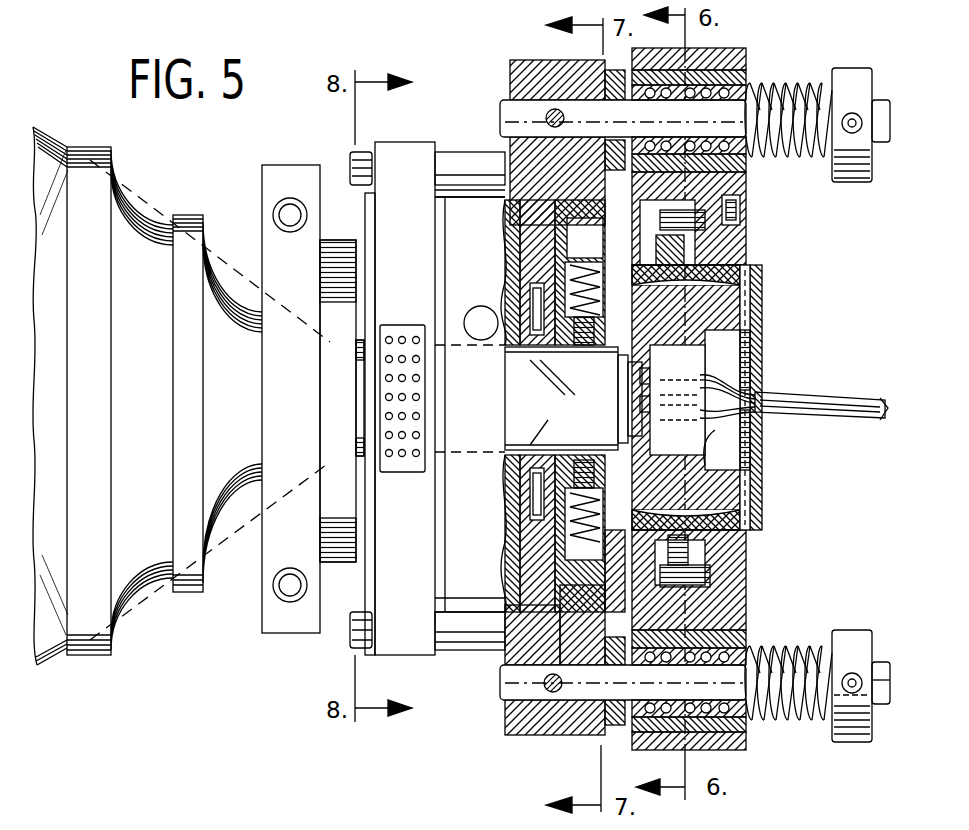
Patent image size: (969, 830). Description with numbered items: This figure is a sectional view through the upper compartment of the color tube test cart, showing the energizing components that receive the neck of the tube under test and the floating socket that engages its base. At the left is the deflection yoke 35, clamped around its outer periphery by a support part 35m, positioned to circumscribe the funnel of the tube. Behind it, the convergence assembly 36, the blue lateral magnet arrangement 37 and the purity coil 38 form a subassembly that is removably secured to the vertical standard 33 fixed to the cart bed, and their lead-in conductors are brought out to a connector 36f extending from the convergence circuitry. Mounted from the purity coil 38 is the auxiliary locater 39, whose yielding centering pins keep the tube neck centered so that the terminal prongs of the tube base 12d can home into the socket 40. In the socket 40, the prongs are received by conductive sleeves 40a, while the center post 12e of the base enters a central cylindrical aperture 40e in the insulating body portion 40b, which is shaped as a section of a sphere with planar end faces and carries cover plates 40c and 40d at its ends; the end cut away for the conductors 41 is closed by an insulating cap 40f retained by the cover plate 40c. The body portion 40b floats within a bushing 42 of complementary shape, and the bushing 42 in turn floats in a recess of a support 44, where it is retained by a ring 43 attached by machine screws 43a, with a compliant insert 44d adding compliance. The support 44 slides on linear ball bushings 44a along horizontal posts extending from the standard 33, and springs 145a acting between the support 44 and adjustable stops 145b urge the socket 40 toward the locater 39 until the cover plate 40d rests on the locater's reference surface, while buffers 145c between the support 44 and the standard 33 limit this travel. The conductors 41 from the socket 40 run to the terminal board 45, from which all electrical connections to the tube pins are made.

The deflection yoke 35 is at (130, 240).
The yoke support part 35m is at (275, 182).
The convergence assembly 36 is at (446, 210).
The connector 36f is at (402, 336).
The blue lateral magnet arrangement 37 is at (480, 215).
The purity coil 38 is at (512, 470).
The auxiliary locater 39 is at (616, 250).
The vertical standard 33 is at (505, 650).
The tube base 12d is at (644, 376).
The center post 12e is at (644, 407).
The socket 40 is at (762, 510).
The conductive sleeves 40a is at (720, 372).
The socket body portion 40b is at (752, 490).
The cover plate 40c is at (765, 284).
The cover plate 40d is at (625, 545).
The cylindrical aperture 40e is at (755, 430).
The insulating cap 40f is at (755, 456).
The conductors 41 is at (792, 400).
The bushing 42 is at (748, 545).
The ring 43 is at (748, 248).
The machine screws 43a is at (738, 212).
The support 44 is at (748, 184).
The linear ball bushings 44a is at (748, 718).
The compliant insert 44d is at (718, 735).
The terminal board 45 is at (885, 665).
The springs 145a is at (860, 740).
The adjustable stops 145b is at (881, 730).
The buffers 145c is at (615, 738).